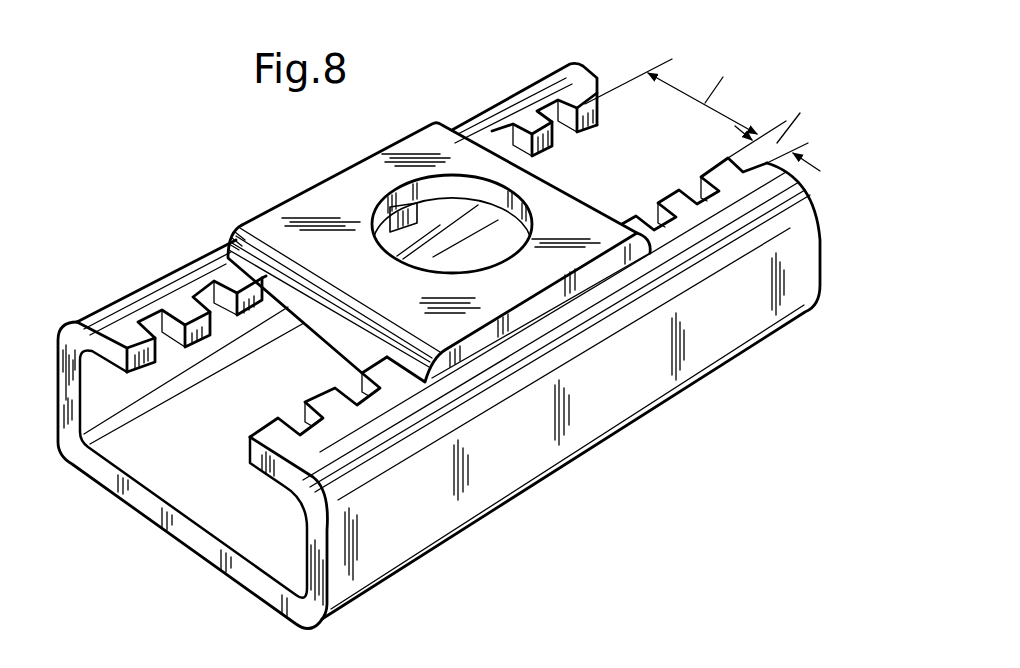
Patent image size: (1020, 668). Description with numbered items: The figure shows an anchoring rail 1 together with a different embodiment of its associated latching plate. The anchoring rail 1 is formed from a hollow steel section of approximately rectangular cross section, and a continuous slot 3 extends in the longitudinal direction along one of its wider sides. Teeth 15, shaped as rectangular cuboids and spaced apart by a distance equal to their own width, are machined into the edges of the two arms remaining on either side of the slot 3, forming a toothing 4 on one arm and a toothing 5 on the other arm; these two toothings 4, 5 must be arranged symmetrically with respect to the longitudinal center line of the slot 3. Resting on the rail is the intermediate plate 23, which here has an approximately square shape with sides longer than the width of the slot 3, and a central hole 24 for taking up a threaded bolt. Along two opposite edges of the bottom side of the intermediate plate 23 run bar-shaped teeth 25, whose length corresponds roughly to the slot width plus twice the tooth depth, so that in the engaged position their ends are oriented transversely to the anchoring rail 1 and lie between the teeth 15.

The anchoring rail 1 is at (439, 319).
The slot 3 is at (632, 153).
The toothing 4 is at (561, 138).
The toothing 5 is at (260, 422).
The teeth 15 is at (233, 277).
The intermediate plate 23 is at (439, 234).
The central hole 24 is at (452, 235).
The bar teeth 25 is at (290, 300).